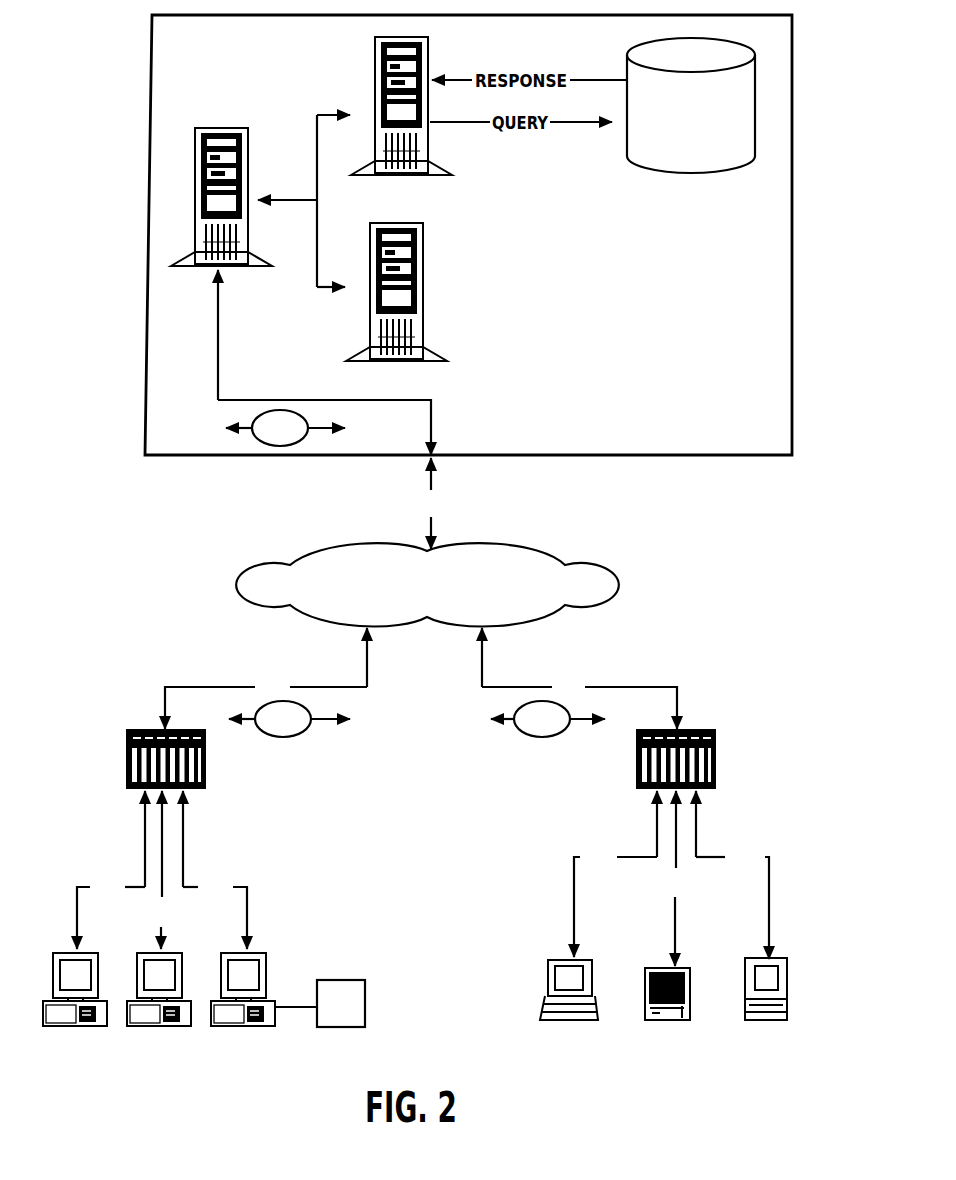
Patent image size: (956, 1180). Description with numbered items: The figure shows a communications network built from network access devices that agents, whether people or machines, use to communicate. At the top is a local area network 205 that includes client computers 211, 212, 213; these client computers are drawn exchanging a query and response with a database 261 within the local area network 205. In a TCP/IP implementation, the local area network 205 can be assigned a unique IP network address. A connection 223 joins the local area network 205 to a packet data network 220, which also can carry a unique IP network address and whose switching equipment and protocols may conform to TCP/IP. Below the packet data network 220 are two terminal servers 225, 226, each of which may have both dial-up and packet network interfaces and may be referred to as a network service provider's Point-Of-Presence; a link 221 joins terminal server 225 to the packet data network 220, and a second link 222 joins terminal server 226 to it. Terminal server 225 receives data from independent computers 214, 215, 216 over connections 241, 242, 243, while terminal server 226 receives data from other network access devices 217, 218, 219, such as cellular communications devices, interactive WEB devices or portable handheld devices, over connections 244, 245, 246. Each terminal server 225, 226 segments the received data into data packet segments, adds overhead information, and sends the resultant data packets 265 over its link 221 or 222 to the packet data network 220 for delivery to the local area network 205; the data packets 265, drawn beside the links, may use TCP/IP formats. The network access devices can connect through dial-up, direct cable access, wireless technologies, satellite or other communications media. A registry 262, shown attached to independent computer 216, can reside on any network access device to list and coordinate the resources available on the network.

The local area network 205 is at (468, 235).
The client computer 211 is at (221, 184).
The client computer 212 is at (401, 122).
The client computer 213 is at (396, 306).
The database 261 is at (691, 105).
The data packet 265 is at (415, 573).
The network connection 223 is at (430, 503).
The packet data network 220 is at (427, 584).
The link 221 is at (266, 678).
The network connection 222 is at (579, 678).
The terminal server 225 is at (127, 760).
The terminal server 226 is at (715, 760).
The connection 241 is at (111, 870).
The connection 242 is at (161, 870).
The connection 243 is at (215, 870).
The connection 244 is at (615, 874).
The connection 245 is at (675, 878).
The connection 246 is at (732, 875).
The independent computer 214 is at (75, 1005).
The independent computer 215 is at (159, 1005).
The independent computer 216 is at (243, 1005).
The network access device 217 is at (569, 1006).
The network access device 218 is at (667, 1010).
The network access device 219 is at (766, 1005).
The registry 262 is at (320, 1003).